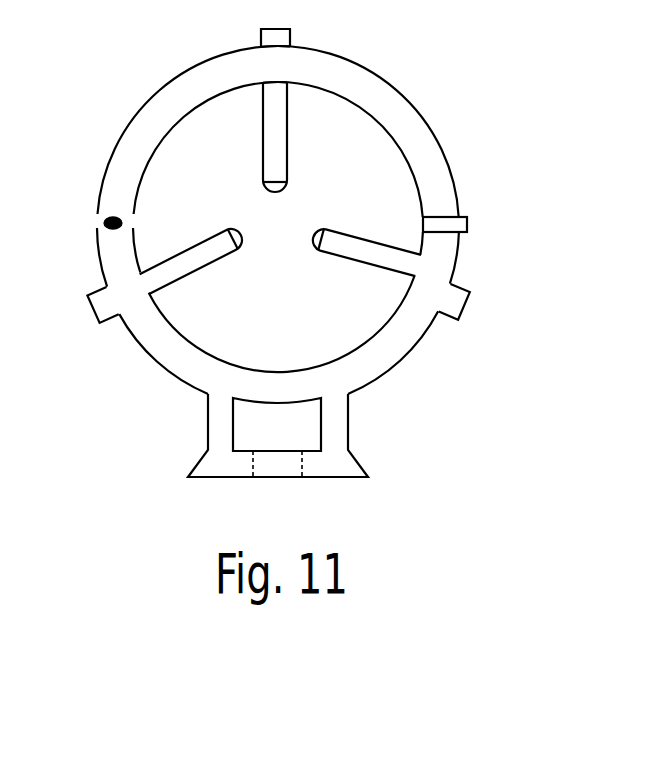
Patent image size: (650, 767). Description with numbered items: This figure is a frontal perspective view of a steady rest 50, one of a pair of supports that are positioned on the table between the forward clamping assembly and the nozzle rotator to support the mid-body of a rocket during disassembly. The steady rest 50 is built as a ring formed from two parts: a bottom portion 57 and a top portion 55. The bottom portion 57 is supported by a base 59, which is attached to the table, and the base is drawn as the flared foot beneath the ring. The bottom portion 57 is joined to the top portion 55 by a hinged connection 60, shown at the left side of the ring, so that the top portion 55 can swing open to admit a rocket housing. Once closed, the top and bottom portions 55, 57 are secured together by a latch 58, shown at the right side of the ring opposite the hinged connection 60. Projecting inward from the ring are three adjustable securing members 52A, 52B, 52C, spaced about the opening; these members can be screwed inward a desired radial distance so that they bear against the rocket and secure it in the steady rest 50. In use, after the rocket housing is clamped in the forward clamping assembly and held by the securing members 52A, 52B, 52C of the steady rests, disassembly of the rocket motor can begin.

The steady rest 50 is at (410, 88).
The top portion 55 is at (153, 92).
The bottom portion 57 is at (383, 357).
The adjustable securing member 52A is at (268, 134).
The adjustable securing member 52B is at (348, 245).
The adjustable securing member 52C is at (203, 258).
The latch 58 is at (464, 222).
The base 59 is at (325, 463).
The hinged connection 60 is at (104, 223).